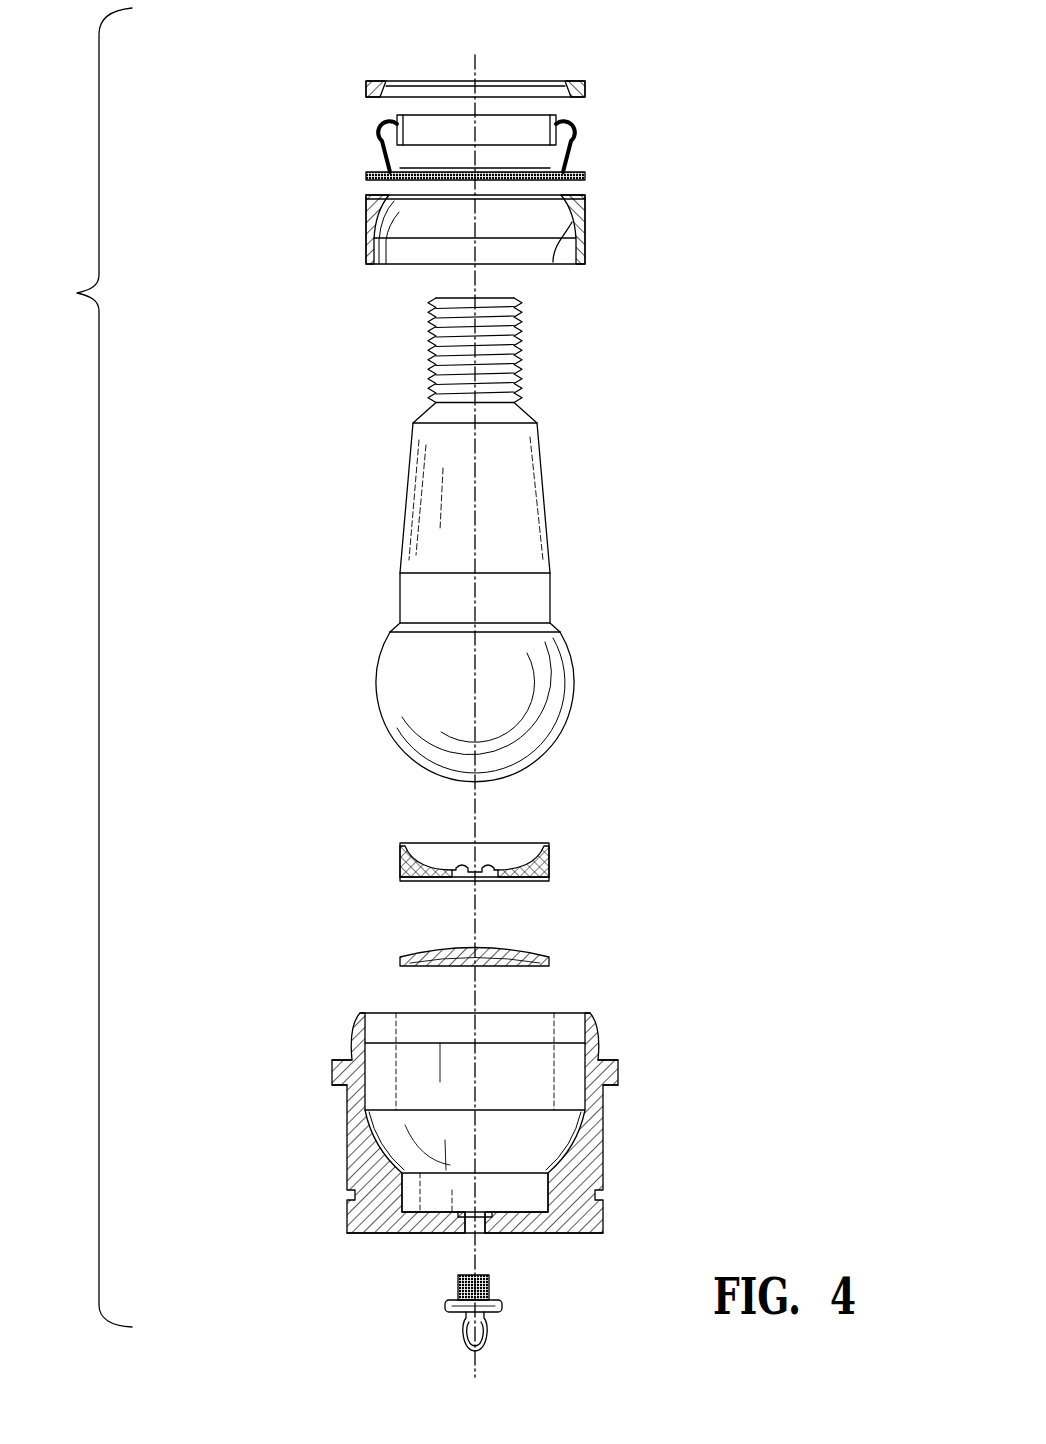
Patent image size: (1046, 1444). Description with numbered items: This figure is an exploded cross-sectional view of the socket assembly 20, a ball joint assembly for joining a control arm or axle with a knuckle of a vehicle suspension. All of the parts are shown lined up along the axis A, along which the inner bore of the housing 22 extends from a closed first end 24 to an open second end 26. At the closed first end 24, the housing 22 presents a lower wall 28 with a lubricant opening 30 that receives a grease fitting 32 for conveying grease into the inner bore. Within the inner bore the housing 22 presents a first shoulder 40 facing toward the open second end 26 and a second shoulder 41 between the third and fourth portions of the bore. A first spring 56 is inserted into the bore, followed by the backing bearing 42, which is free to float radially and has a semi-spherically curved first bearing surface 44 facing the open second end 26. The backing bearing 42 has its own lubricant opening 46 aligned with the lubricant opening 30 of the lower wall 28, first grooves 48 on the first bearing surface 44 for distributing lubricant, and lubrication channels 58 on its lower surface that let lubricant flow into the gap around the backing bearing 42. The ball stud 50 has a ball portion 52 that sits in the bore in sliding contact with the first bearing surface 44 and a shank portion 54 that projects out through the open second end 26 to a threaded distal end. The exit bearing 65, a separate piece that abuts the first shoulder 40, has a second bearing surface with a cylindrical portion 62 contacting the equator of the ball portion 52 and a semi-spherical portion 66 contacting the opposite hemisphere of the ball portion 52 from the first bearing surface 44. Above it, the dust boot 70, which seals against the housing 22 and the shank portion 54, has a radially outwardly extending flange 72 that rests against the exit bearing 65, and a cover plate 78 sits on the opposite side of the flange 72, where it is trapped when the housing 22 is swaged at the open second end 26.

The socket assembly 20 is at (268, 377).
The housing 22 is at (421, 1140).
The closed first end 24 is at (515, 1228).
The open second end 26 is at (575, 1013).
The lower wall 28 is at (413, 1236).
The lubricant opening 30 is at (470, 1236).
The grease fitting 32 is at (486, 1322).
The first shoulder 40 is at (345, 1097).
The second shoulder 41 is at (503, 1043).
The backing bearing 42 is at (446, 866).
The first bearing surface 44 is at (420, 843).
The lubricant opening 46 is at (465, 880).
The first grooves 48 is at (540, 843).
The ball stud 50 is at (486, 540).
The ball portion 52 is at (520, 684).
The shank portion 54 is at (435, 497).
The first spring 56 is at (416, 967).
The lubrication channels 58 is at (422, 882).
The cylindrical portion 62 is at (414, 260).
The exit bearing 65 is at (435, 260).
The semi-spherical portion 66 is at (553, 262).
The dust boot 70 is at (503, 102).
The radially outwardly extending flange 72 is at (588, 180).
The cover plate 78 is at (368, 80).
The axis A is at (476, 78).